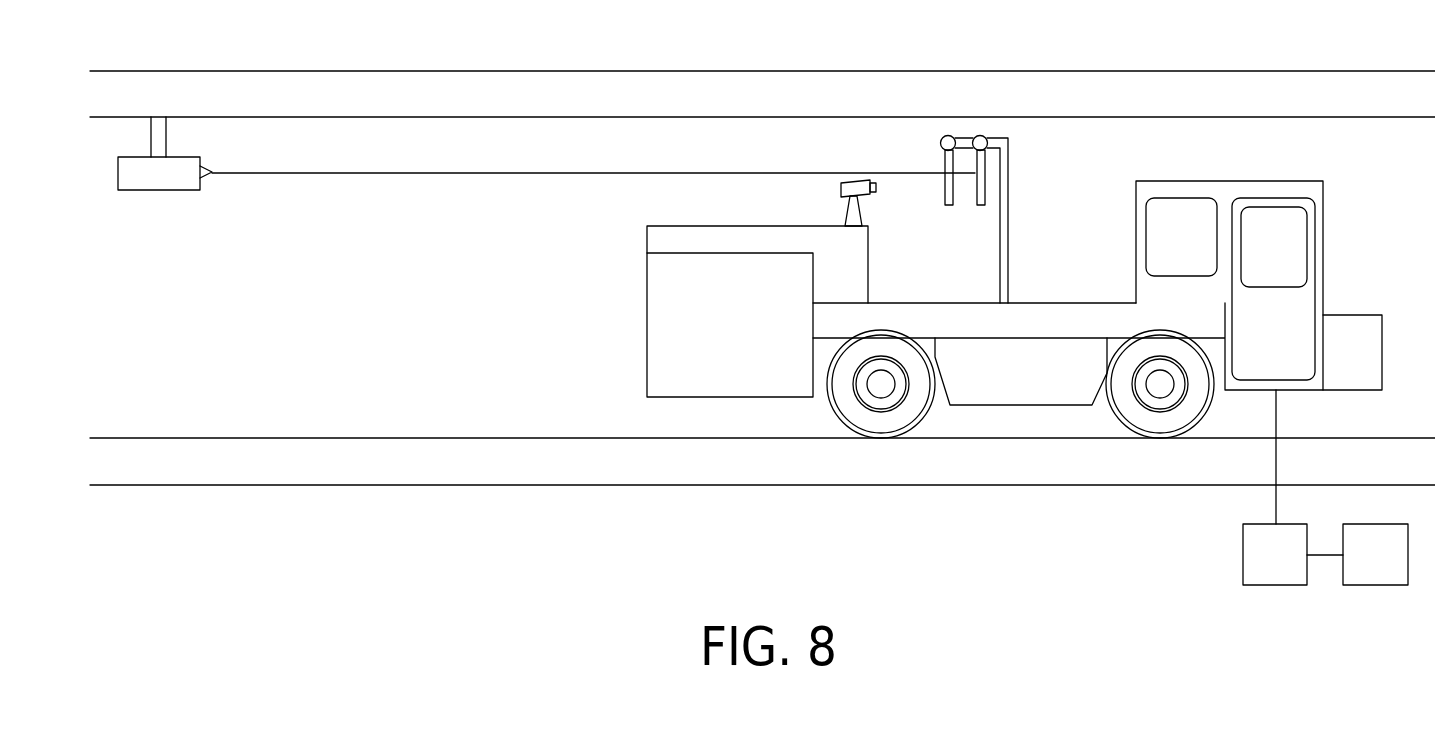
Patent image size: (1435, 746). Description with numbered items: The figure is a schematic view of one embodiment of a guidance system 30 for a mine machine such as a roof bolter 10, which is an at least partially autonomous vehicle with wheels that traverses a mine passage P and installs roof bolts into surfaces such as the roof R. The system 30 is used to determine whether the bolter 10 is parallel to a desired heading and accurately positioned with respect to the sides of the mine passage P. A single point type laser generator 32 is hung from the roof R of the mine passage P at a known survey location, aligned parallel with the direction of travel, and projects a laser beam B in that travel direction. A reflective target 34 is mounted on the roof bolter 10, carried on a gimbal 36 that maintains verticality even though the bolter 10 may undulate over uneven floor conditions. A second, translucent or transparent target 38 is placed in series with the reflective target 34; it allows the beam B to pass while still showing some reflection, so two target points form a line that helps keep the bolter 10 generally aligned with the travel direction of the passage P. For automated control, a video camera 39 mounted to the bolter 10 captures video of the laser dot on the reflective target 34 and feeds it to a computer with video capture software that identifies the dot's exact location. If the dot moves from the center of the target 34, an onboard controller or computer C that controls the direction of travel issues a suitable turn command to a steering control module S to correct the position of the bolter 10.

The roof bolter 10 is at (1332, 256).
The guidance system 30 is at (557, 258).
The single point type laser generator 32 is at (160, 182).
The reflective target 34 is at (976, 200).
The gimbal 36 is at (963, 137).
The second translucent or transparent target 38 is at (944, 198).
The video camera 39 is at (846, 204).
The roof R is at (375, 117).
The laser beam B is at (460, 174).
The mine passage P is at (336, 293).
The onboard controller or computer C is at (1275, 554).
The steering control module S is at (1375, 554).